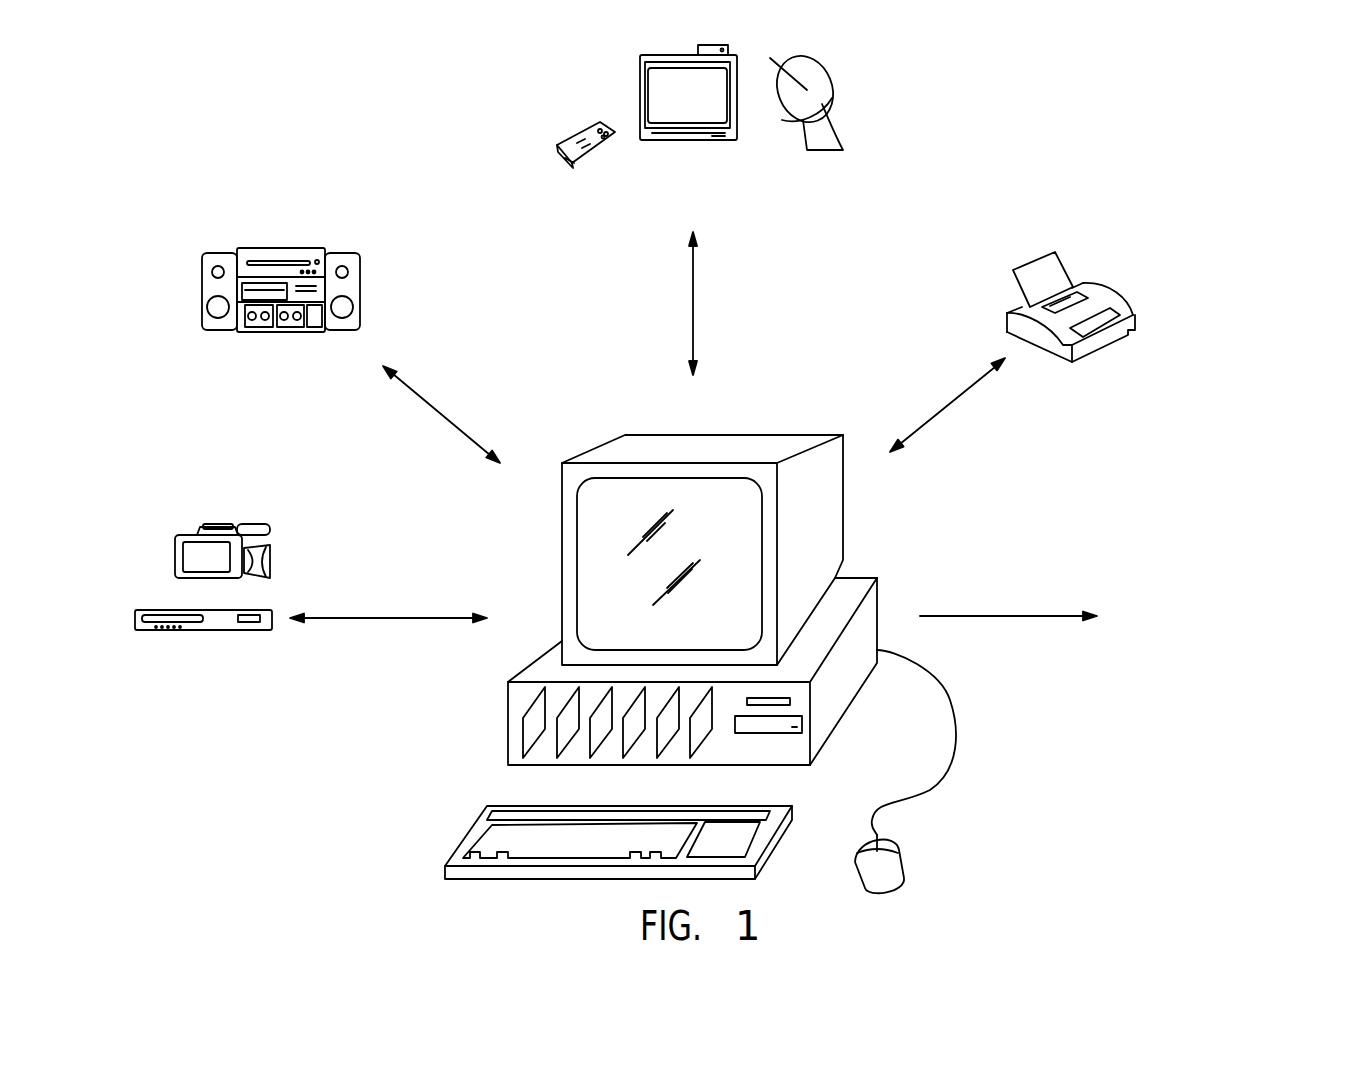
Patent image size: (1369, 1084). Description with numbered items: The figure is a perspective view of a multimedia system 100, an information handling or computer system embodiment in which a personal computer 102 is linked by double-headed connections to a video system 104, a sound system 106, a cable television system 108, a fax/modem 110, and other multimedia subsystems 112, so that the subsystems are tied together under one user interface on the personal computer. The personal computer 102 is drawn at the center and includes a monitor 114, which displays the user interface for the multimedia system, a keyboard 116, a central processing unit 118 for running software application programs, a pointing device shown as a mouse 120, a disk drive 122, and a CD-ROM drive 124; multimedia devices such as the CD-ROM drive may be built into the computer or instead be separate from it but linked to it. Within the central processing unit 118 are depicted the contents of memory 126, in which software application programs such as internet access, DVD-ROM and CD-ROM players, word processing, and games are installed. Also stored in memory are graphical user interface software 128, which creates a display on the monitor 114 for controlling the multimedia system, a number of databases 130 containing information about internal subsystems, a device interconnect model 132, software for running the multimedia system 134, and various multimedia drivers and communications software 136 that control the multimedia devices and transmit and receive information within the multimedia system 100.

The multimedia system 100 is at (1122, 194).
The personal computer 102 is at (793, 395).
The video system 104 is at (120, 671).
The sound system 106 is at (203, 367).
The cable television system 108 is at (753, 212).
The fax/modem 110 is at (1128, 414).
The other multimedia subsystems 112 is at (1287, 649).
The monitor 114 is at (828, 528).
The keyboard 116 is at (463, 837).
The central processing unit 118 is at (859, 585).
The mouse 120 is at (891, 838).
The disk drive 122 is at (790, 702).
The CD-ROM drive 124 is at (803, 722).
The memory 126 is at (523, 740).
The graphical user interface software 128 is at (568, 698).
The databases 130 is at (572, 760).
The device interconnect model 132 is at (580, 740).
The software for running the multimedia system 134 is at (660, 748).
The multimedia drivers and communications software 136 is at (700, 727).